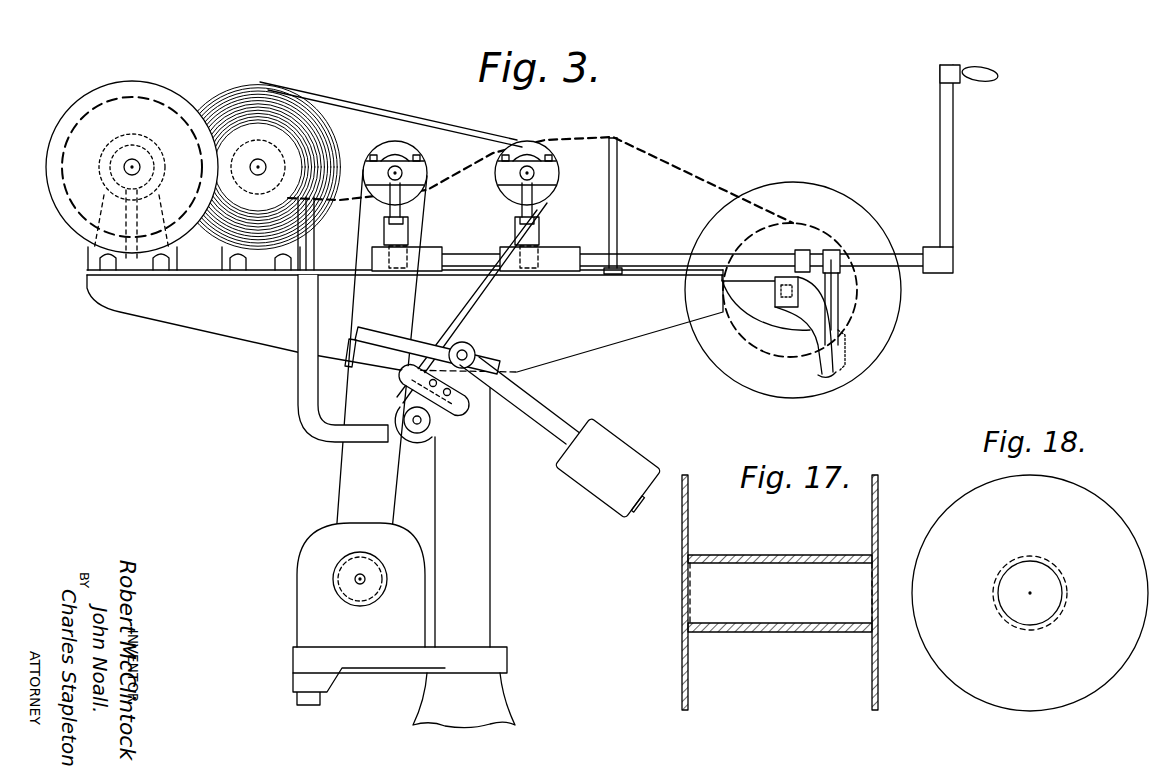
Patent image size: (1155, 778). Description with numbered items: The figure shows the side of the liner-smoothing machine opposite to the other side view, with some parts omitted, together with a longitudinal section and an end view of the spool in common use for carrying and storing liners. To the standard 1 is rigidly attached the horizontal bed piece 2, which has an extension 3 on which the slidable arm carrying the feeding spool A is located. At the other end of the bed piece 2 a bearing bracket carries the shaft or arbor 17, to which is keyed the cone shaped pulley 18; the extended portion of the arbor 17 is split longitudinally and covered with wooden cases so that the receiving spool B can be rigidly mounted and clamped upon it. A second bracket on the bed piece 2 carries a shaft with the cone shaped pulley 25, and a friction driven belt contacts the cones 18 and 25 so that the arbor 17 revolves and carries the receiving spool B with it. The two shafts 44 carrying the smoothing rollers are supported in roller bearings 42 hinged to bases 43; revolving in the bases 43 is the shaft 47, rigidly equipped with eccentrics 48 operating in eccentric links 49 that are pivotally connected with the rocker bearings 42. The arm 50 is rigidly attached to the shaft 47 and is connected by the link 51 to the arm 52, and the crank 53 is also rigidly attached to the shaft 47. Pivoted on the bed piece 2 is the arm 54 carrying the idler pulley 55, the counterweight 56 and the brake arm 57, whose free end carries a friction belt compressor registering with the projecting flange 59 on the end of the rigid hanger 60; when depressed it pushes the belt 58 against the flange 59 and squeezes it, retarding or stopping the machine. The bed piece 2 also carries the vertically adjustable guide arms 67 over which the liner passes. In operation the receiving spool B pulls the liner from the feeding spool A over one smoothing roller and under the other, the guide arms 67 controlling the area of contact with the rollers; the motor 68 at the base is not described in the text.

In FIG. 3, the standard 1 is at (476, 592).
In FIG. 3, the bed piece 2 is at (405, 321).
In FIG. 3, the extension 3 is at (738, 279).
In FIG. 3, the shaft or arbor 17 is at (125, 167).
In FIG. 3, the cone shaped pulley 18 is at (55, 132).
In FIG. 3, the cone shaped pulley 25 is at (333, 135).
In FIG. 3, the roller bearings 42 is at (421, 178).
In FIG. 3, the bases 43 is at (427, 257).
In FIG. 3, the shafts 44 is at (397, 166).
In FIG. 3, the shaft 47 is at (648, 256).
In FIG. 3, the eccentrics 48 is at (387, 272).
In FIG. 3, the eccentric link 49 is at (397, 273).
In FIG. 3, the arm 50 is at (838, 295).
In FIG. 3, the link 51 is at (841, 352).
In FIG. 3, the arm 52 is at (813, 336).
In FIG. 3, the crank 53 is at (948, 167).
In FIG. 3, the arm 54 is at (460, 382).
In FIG. 3, the idler pulley 55 is at (426, 436).
In FIG. 3, the counterweight 56 is at (587, 481).
In FIG. 3, the brake arm 57 is at (402, 360).
In FIG. 3, the belt 58 is at (358, 102).
In FIG. 3, the projecting flange 59 is at (373, 452).
In FIG. 3, the rigid hanger 60 is at (298, 395).
In FIG. 3, the guide arms 67 is at (623, 139).
In FIG. 3, the motor 68 is at (310, 630).
In FIG. 3, the feeding spool A is at (732, 372).
In FIG. 17, the feeding spool A is at (760, 592).
In FIG. 18, the receiving spool B is at (1030, 593).